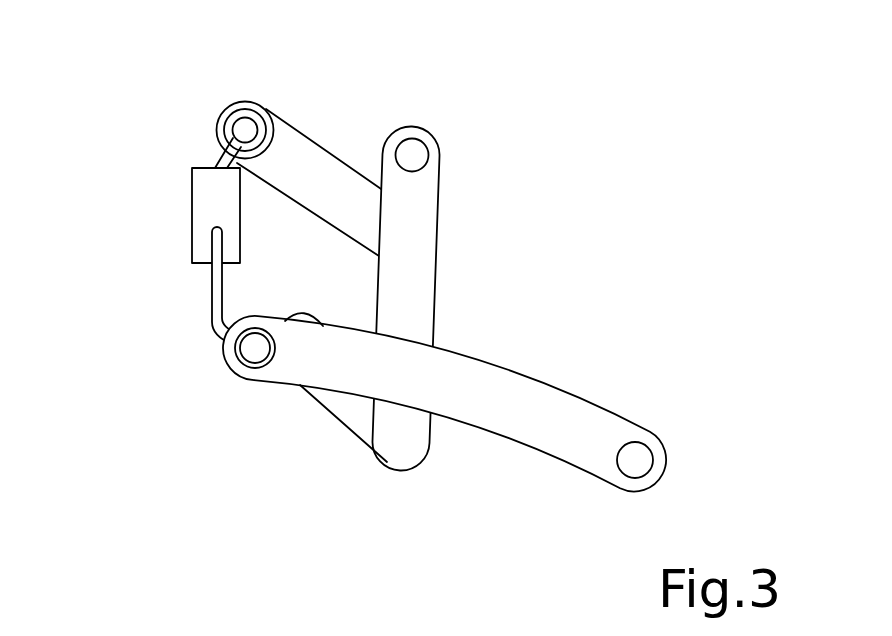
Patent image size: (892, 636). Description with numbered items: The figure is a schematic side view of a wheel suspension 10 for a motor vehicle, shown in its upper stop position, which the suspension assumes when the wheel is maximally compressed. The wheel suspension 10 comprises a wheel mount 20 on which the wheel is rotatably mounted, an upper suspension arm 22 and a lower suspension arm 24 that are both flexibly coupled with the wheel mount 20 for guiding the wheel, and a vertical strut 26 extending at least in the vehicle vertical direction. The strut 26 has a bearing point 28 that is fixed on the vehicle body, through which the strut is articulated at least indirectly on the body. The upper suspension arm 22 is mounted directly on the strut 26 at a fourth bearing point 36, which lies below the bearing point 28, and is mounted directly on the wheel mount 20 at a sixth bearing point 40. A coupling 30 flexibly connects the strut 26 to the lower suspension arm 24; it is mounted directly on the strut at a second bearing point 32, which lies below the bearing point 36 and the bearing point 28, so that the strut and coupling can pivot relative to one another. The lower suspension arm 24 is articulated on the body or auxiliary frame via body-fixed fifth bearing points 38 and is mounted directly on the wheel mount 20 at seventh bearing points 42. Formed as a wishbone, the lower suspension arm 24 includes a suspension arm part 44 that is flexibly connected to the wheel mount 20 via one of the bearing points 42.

The wheel suspension 10 is at (376, 296).
The wheel mount 20 is at (217, 275).
The upper suspension arm 22 is at (315, 167).
The lower suspension arm 24 is at (483, 427).
The strut 26 is at (410, 312).
The bearing point 28 is at (413, 157).
The coupling 30 is at (335, 403).
The second bearing point 32 is at (400, 448).
The fourth bearing point 36 is at (415, 237).
The fifth bearing points 38 is at (633, 467).
The sixth bearing point 40 is at (246, 118).
The seventh bearing points 42 is at (253, 355).
The suspension arm part 44 is at (550, 447).